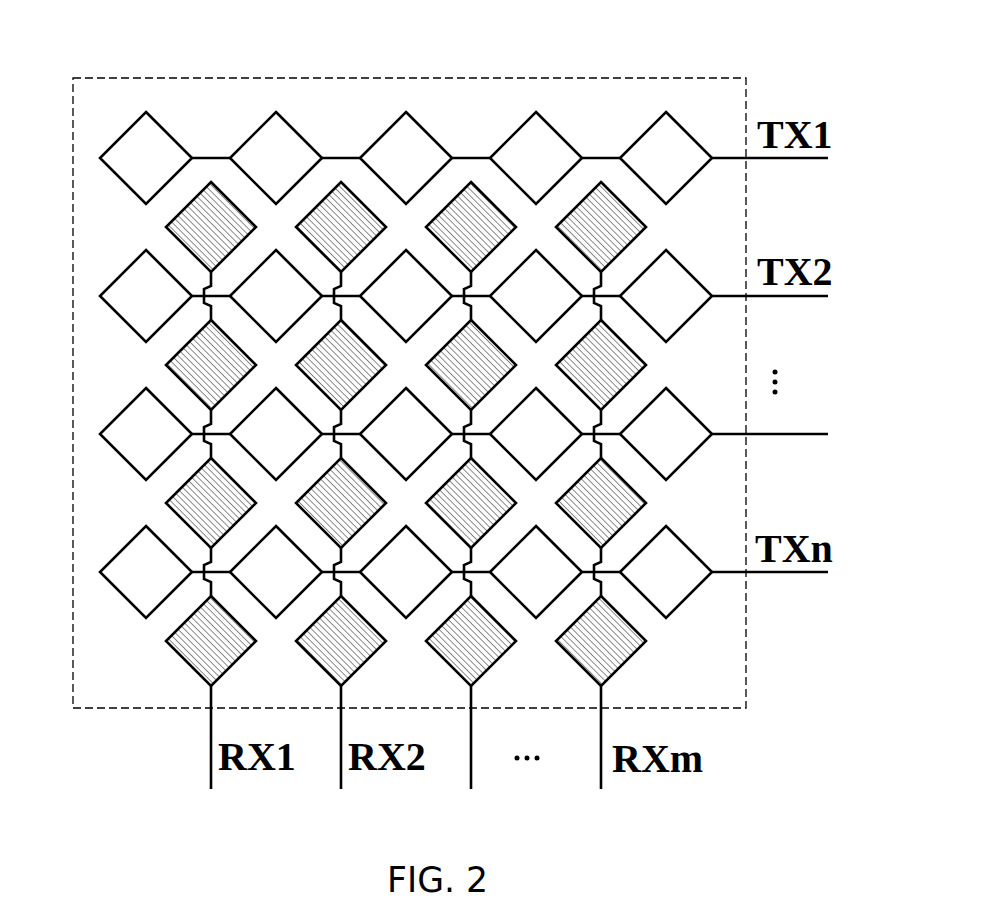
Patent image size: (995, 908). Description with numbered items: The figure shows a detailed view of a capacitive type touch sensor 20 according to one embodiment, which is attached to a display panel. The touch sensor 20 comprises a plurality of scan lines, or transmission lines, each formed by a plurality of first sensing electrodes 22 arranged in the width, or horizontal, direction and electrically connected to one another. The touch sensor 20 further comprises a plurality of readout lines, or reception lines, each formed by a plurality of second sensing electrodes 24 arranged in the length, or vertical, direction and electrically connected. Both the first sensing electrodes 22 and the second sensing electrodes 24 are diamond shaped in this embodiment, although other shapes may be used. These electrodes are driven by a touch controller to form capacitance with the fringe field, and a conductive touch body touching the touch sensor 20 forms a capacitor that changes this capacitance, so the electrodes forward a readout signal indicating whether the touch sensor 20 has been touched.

The touch sensor 20 is at (660, 78).
The first sensing electrode 22 is at (163, 128).
The second sensing electrode 24 is at (630, 250).